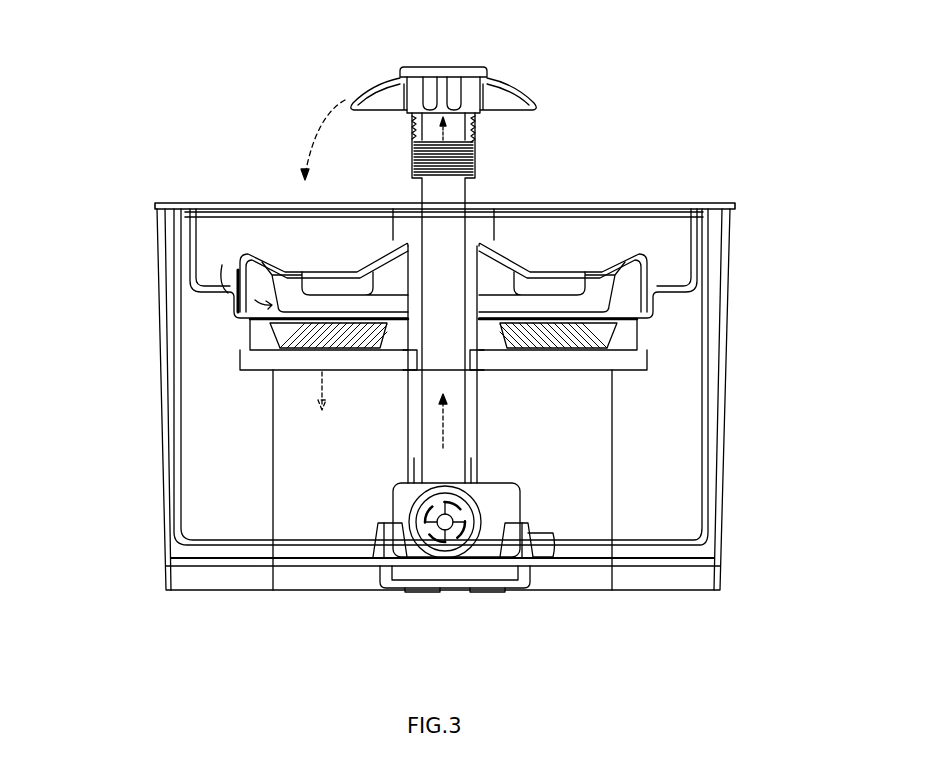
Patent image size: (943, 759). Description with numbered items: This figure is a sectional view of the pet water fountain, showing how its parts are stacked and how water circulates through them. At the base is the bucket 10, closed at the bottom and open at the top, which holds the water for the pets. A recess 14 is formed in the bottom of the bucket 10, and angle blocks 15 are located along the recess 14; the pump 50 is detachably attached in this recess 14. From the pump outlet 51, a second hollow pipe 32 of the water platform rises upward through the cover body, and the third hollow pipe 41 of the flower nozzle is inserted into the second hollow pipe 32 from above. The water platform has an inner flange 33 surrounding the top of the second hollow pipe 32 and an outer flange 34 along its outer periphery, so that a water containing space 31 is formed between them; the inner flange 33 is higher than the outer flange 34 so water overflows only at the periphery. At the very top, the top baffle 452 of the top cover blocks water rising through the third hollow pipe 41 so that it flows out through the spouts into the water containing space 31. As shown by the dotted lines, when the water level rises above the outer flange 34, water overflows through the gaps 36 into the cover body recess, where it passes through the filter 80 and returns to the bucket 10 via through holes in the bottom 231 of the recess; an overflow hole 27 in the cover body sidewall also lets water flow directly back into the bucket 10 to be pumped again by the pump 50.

The bucket 10 is at (708, 493).
The recess 14 is at (460, 568).
The angle blocks 15 is at (553, 533).
The overflow hole 27 is at (193, 275).
The water containing space 31 is at (317, 263).
The second hollow pipe 32 is at (470, 398).
The inner flange 33 is at (400, 205).
The outer flange 34 is at (247, 253).
The gaps 36 is at (232, 297).
The third hollow pipe 41 is at (465, 192).
The pump 50 is at (390, 505).
The pump outlet 51 is at (470, 460).
The filter 80 is at (250, 327).
The bottom of the recess 231 is at (297, 362).
The top baffle 452 is at (455, 70).